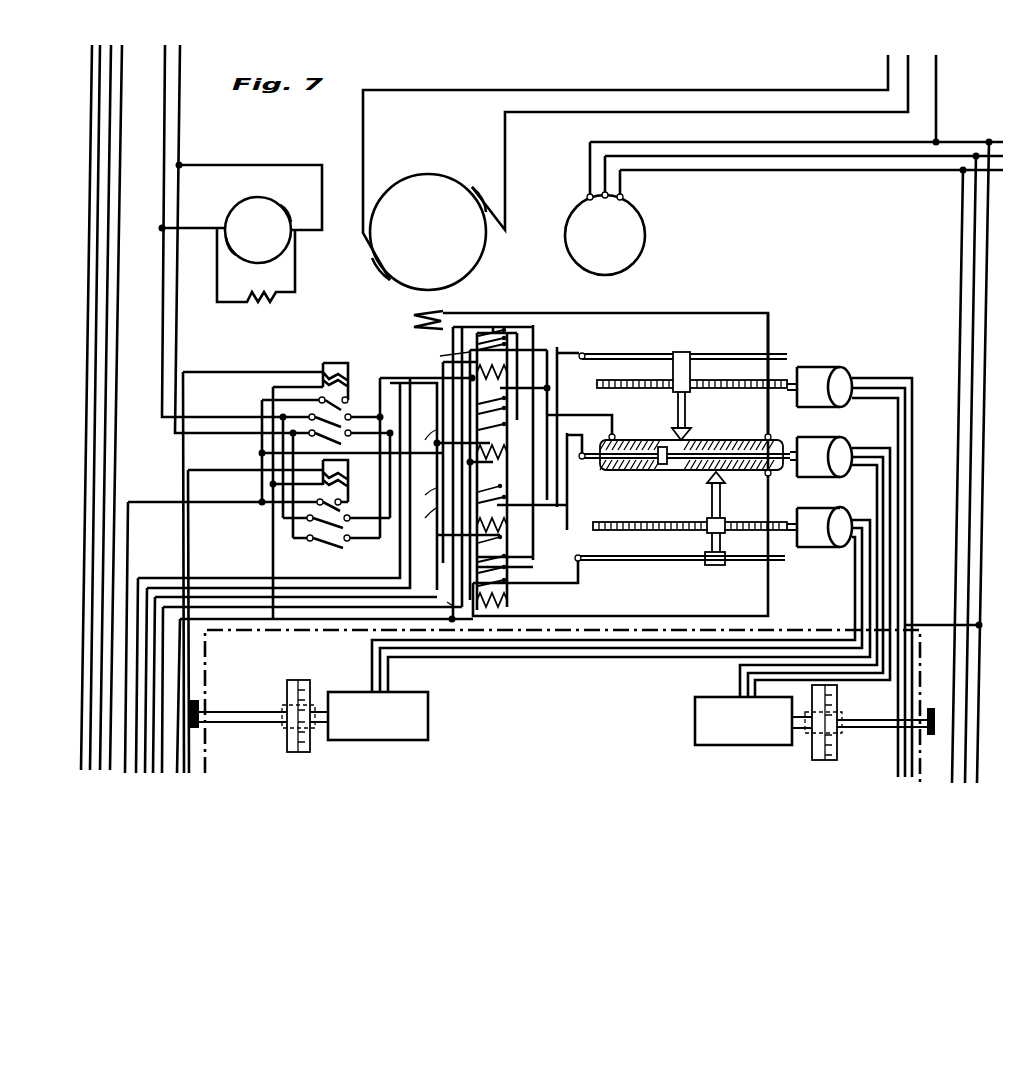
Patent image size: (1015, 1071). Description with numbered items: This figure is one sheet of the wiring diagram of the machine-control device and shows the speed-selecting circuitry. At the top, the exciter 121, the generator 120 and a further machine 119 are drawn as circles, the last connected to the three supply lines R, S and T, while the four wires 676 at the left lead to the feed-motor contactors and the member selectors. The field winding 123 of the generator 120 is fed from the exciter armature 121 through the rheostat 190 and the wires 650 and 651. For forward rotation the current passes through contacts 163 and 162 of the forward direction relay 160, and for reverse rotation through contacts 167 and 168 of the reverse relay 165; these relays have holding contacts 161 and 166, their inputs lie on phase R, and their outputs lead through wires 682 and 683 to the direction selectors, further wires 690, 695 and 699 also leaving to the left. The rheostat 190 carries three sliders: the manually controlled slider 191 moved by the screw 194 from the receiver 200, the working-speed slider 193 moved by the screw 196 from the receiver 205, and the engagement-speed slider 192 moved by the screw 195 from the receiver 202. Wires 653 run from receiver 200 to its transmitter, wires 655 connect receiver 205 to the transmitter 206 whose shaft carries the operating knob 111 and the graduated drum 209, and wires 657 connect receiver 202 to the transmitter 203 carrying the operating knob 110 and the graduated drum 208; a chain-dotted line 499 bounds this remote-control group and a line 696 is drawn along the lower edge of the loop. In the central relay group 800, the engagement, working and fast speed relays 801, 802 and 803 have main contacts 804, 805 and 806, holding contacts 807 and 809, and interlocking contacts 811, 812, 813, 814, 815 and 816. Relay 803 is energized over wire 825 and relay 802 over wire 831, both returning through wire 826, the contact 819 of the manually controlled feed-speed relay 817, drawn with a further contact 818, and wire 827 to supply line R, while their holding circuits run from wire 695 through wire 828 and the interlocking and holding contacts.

The wires 676 is at (120, 142).
The exciter 121 is at (242, 233).
The generator 120 is at (635, 172).
The motor 119 is at (784, 208).
The supply line R is at (940, 100).
The phase conductor S is at (972, 322).
The supply line T is at (960, 303).
The wire 651 is at (702, 311).
The field winding 123 is at (454, 318).
The interlocking contact 816 is at (494, 326).
The wire 683 is at (263, 372).
The reverse relay 165 is at (334, 363).
The wire 650 is at (380, 390).
The holding contact 166 is at (334, 405).
The contact 167 is at (342, 424).
The contact 168 is at (342, 443).
The forward direction relay 160 is at (340, 475).
The wire 682 is at (206, 470).
The wire 695 is at (216, 503).
The holding contact 161 is at (342, 512).
The contact 162 is at (346, 485).
The contact 163 is at (345, 548).
The conductor 699 is at (228, 597).
The conductor 690 is at (307, 607).
The wire 825 is at (390, 383).
The switching unit 800 is at (496, 472).
The wire 828 is at (430, 431).
The wire 826 is at (428, 492).
The wire 831 is at (430, 508).
The main contact 806 is at (444, 354).
The wire 827 is at (437, 597).
The holding contact 809 is at (484, 326).
The interlocking contact 815 is at (494, 330).
The speed-selecting relay 803 is at (504, 378).
The interlocking contact 814 is at (497, 400).
The interlocking contact 813 is at (500, 411).
The main contact 805 is at (502, 431).
The working speed relay 802 is at (510, 458).
The contact 819 is at (495, 478).
The contact 818 is at (510, 496).
The manually controlled feed-speed relay 817 is at (510, 521).
The interlocking contact 812 is at (497, 542).
The interlocking contact 811 is at (508, 560).
The holding contact 807 is at (508, 571).
The main contact 804 is at (508, 584).
The engagement speed relay 801 is at (508, 602).
The screw 194 is at (732, 382).
The slider 191 is at (688, 395).
The rheostat 190 is at (677, 469).
The slider 193 is at (665, 465).
The screw 196 is at (614, 468).
The slider 192 is at (722, 493).
The screw 195 is at (603, 521).
The receiver 200 is at (823, 377).
The receiver 205 is at (825, 447).
The receiver 202 is at (822, 518).
The wires 653 is at (898, 406).
The wires 655 is at (877, 478).
The wires 657 is at (855, 573).
The housing wall 696 is at (732, 616).
The boundary line 499 is at (256, 632).
The operating knob 110 is at (198, 703).
The graduated drum 208 is at (303, 752).
The transmitter 203 is at (378, 716).
The transmitter 206 is at (753, 721).
The graduated drum 209 is at (830, 758).
The operating knob 111 is at (931, 708).